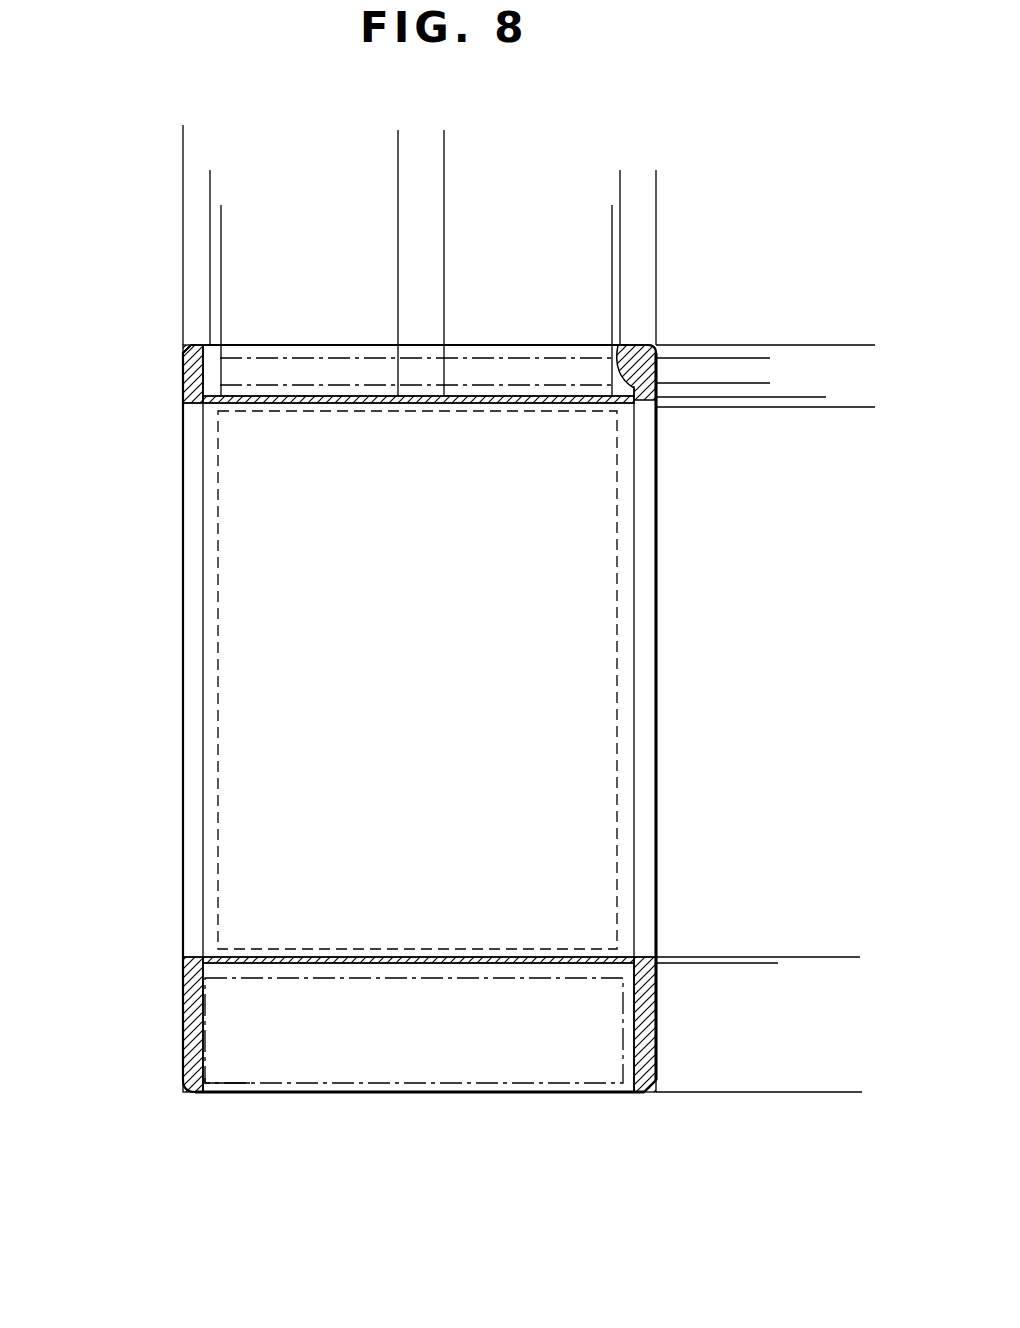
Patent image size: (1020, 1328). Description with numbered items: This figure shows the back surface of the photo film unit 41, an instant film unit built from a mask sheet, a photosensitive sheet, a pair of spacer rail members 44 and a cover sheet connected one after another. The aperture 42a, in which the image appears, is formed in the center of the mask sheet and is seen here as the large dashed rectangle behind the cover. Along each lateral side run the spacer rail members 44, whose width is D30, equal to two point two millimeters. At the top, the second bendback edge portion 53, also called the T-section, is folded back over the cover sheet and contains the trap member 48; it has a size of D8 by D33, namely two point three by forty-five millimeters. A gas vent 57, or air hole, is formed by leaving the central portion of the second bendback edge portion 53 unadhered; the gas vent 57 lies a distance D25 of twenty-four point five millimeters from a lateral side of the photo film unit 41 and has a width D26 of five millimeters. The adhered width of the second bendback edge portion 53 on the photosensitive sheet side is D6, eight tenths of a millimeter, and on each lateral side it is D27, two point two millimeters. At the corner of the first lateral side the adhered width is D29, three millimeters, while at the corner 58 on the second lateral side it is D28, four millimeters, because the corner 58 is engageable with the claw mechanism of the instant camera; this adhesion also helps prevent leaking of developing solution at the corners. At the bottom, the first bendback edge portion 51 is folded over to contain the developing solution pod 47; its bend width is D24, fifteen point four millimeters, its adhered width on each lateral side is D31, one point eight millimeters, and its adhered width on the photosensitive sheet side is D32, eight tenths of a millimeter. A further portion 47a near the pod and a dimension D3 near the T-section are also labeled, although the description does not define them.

The photo film unit 41 is at (453, 1112).
The spacer rail members 44 is at (190, 565).
The aperture 42a is at (617, 775).
The developing solution pod 47 is at (335, 1065).
The bottom corner portion 47a is at (250, 1085).
The trap member 48 is at (332, 358).
The first bendback edge portion 51 is at (558, 1092).
The second bendback edge portion 53 is at (420, 340).
The gas vent 57 is at (418, 398).
The corner 58 is at (626, 345).
The dimension D3 is at (863, 290).
The adhered width of second bendback edge portion on photosensitive sheet side D6 is at (811, 355).
The size of second bendback edge portion D8 is at (750, 305).
The bend width of first bendback edge portion D24 is at (852, 957).
The distance of gas vent from lateral side D25 is at (398, 141).
The width of gas vent D26 is at (398, 141).
The adhered width of second bendback edge portion on each lateral side D27 is at (245, 373).
The adhered width at corner 58 D28 is at (580, 183).
The adhered width at corner of first lateral side D29 is at (245, 182).
The width of spacer rail members D30 is at (245, 726).
The adhered width of first bendback edge portion on each lateral side D31 is at (255, 1033).
The adhered width of first bendback edge portion on photosensitive sheet side D32 is at (763, 1010).
The size of second bendback edge portion D33 is at (221, 213).